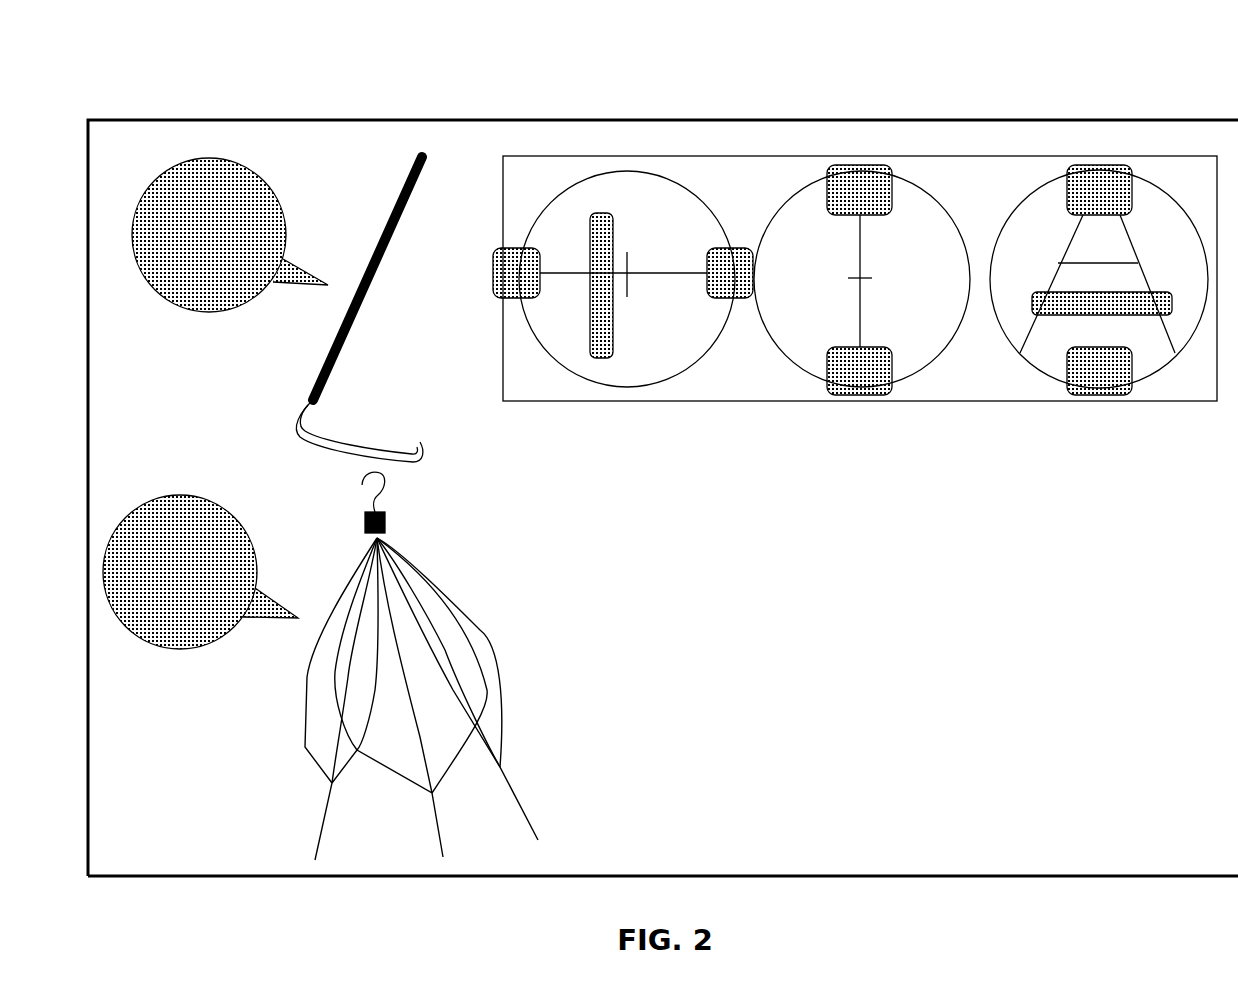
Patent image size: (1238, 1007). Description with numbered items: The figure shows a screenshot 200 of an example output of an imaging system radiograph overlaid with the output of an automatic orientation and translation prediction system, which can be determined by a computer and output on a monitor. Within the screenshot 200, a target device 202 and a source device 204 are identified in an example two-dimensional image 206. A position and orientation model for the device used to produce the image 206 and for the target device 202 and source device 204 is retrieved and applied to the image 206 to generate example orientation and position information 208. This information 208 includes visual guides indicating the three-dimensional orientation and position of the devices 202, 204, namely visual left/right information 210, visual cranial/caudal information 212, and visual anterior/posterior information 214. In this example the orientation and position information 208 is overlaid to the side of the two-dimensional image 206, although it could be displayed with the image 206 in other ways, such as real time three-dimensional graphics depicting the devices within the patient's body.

The screenshot 200 is at (95, 68).
The target device 202 is at (320, 666).
The source device 204 is at (277, 309).
The 2D image 206 is at (349, 135).
The orientation and position information 208 is at (1203, 187).
The visual left/right information 210 is at (560, 208).
The visual cranial/caudal information 212 is at (795, 205).
The visual anterior/posterior information 214 is at (1025, 208).